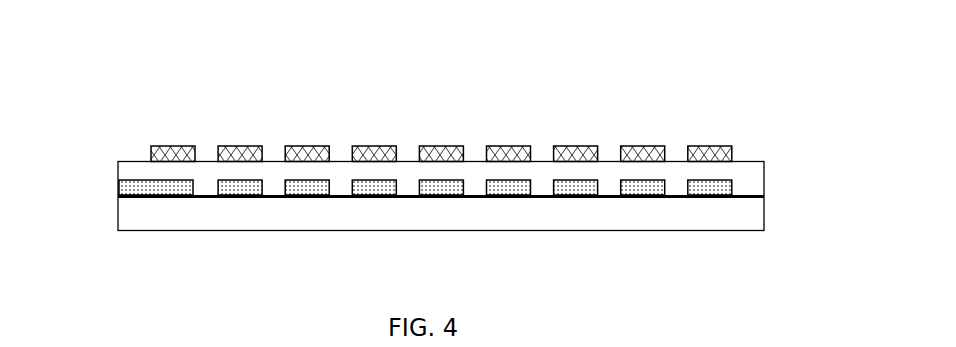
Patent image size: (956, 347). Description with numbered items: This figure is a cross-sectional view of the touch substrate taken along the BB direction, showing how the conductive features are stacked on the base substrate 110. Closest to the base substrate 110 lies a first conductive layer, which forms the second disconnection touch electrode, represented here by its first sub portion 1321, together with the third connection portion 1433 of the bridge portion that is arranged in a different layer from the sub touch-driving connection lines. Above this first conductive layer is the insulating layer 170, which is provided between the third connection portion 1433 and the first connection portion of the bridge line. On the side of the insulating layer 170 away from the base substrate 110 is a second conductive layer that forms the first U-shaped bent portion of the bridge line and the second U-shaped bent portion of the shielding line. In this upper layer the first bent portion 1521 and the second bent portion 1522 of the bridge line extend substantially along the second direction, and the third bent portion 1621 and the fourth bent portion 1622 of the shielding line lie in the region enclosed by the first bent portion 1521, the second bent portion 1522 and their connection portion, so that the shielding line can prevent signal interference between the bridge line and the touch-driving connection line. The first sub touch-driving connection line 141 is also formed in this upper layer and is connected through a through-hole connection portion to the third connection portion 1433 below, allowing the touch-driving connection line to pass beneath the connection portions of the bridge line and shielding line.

The base substrate 110 is at (612, 213).
The insulating layer 170 is at (555, 196).
The first bent portion 1521 is at (166, 147).
The third bent portion 1621 is at (237, 147).
The first sub touch-driving connection line 141 is at (374, 147).
The fourth bent portion 1622 is at (640, 147).
The second bent portion 1522 is at (710, 147).
The first sub portion 1321 is at (175, 188).
The third connection portion 1433 is at (379, 188).